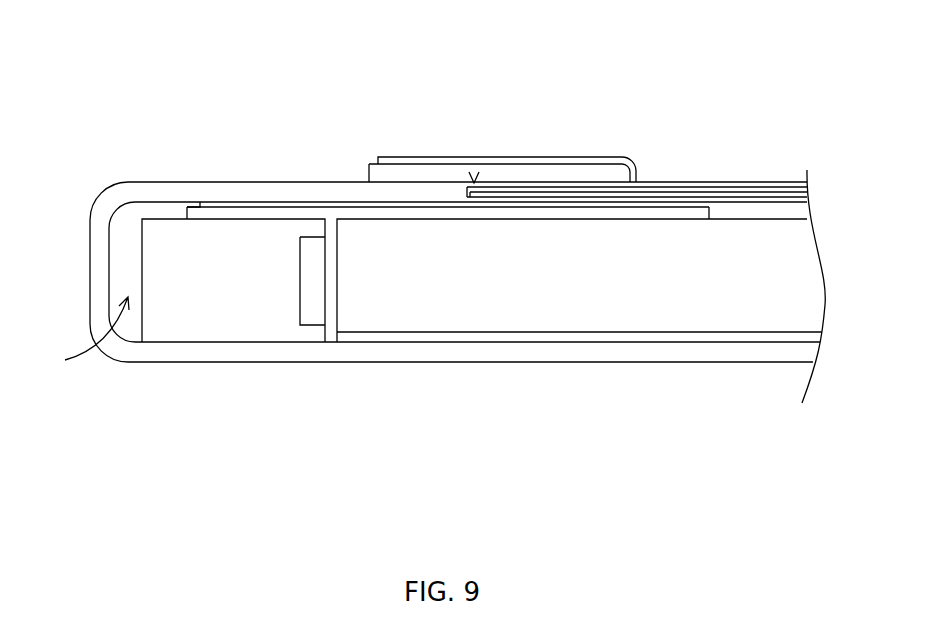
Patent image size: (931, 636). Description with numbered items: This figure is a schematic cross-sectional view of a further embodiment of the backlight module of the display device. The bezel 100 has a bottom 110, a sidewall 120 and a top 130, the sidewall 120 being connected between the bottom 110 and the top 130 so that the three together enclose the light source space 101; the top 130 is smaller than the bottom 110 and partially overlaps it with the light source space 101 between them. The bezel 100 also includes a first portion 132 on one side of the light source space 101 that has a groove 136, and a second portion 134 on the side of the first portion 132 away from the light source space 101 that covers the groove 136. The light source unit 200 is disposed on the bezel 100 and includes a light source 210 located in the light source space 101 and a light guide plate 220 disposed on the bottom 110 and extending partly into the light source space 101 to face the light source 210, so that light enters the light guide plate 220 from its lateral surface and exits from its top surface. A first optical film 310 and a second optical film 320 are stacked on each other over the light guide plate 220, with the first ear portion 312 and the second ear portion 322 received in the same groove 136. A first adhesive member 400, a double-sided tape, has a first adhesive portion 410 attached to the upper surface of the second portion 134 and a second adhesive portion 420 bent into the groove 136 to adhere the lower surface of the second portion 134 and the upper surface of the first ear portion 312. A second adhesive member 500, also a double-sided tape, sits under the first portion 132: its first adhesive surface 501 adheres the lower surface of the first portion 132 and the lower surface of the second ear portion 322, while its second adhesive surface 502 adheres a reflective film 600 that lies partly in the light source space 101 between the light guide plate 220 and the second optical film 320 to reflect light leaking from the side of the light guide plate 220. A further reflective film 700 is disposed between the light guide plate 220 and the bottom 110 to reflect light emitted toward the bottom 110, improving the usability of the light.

The bezel 100 is at (147, 200).
The light source space 101 is at (73, 337).
The bottom 110 is at (683, 352).
The sidewall 120 is at (95, 257).
The top 130 is at (382, 75).
The first portion 132 is at (370, 195).
The second portion 134 is at (401, 175).
The groove 136 is at (474, 183).
The light source unit 200 is at (243, 406).
The light source 210 is at (248, 321).
The light guide plate 220 is at (392, 321).
The first optical film 310 is at (734, 187).
The first ear portion 312 is at (514, 190).
The second optical film 320 is at (766, 200).
The second ear portion 322 is at (467, 190).
The first adhesive member 400 is at (681, 102).
The first adhesive portion 410 is at (598, 157).
The second adhesive portion 420 is at (599, 181).
The second adhesive member 500 is at (233, 207).
The first adhesive surface 501 is at (257, 201).
The second adhesive surface 502 is at (272, 207).
The reflective film 600 is at (215, 202).
The reflective film 700 is at (590, 338).